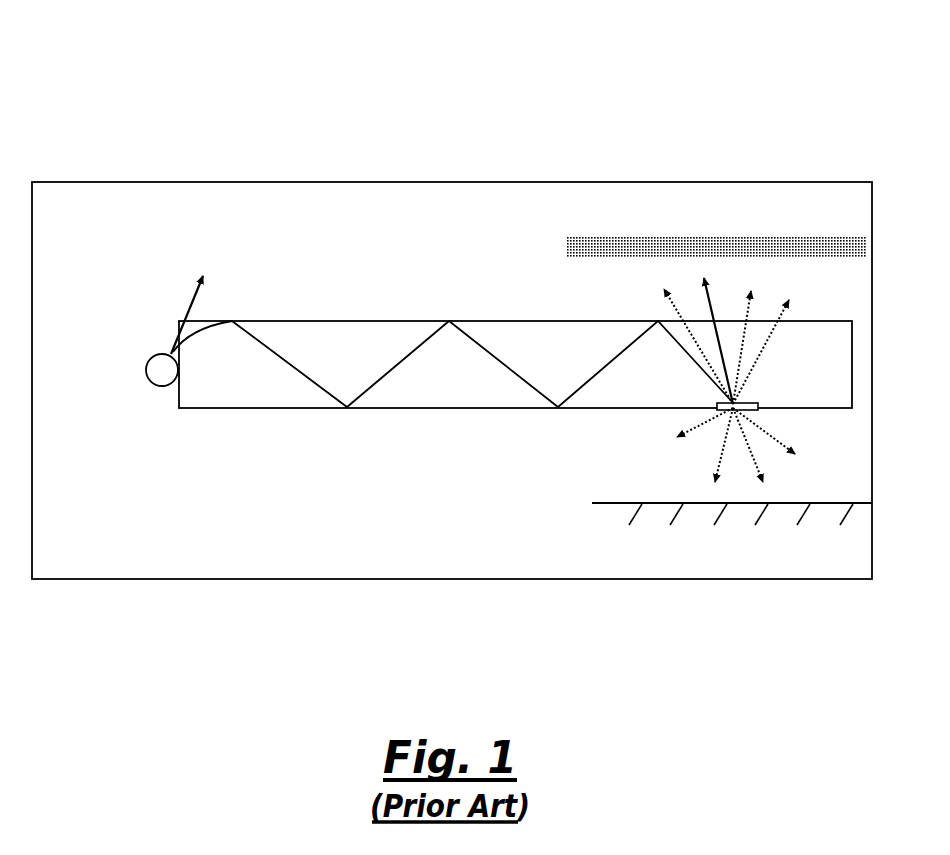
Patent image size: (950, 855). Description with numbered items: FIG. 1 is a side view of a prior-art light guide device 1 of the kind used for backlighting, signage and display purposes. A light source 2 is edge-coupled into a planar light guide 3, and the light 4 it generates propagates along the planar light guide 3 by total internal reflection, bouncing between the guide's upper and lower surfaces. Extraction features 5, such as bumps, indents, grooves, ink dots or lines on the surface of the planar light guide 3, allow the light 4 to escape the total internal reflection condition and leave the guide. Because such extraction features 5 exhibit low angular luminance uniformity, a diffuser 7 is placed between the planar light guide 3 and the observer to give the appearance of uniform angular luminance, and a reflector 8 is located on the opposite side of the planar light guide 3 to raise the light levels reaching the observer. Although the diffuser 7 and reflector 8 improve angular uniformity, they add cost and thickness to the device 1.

The light guide device 1 is at (147, 143).
The light source 2 is at (150, 370).
The planar light guide 3 is at (308, 337).
The light 4 is at (312, 384).
The extraction features 5 is at (759, 409).
The diffuser 7 is at (728, 248).
The reflector 8 is at (695, 503).